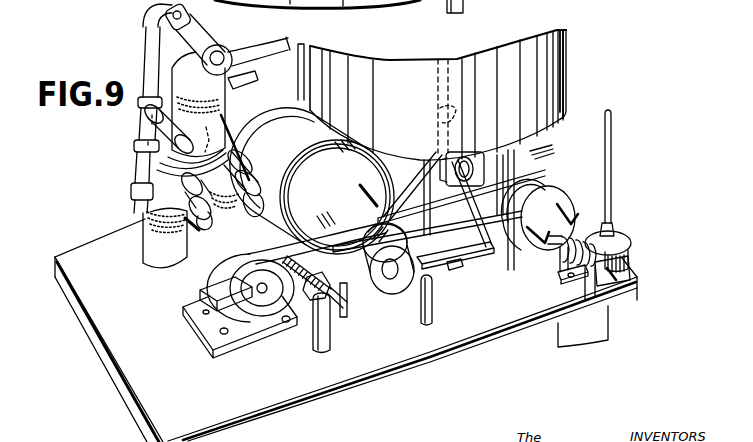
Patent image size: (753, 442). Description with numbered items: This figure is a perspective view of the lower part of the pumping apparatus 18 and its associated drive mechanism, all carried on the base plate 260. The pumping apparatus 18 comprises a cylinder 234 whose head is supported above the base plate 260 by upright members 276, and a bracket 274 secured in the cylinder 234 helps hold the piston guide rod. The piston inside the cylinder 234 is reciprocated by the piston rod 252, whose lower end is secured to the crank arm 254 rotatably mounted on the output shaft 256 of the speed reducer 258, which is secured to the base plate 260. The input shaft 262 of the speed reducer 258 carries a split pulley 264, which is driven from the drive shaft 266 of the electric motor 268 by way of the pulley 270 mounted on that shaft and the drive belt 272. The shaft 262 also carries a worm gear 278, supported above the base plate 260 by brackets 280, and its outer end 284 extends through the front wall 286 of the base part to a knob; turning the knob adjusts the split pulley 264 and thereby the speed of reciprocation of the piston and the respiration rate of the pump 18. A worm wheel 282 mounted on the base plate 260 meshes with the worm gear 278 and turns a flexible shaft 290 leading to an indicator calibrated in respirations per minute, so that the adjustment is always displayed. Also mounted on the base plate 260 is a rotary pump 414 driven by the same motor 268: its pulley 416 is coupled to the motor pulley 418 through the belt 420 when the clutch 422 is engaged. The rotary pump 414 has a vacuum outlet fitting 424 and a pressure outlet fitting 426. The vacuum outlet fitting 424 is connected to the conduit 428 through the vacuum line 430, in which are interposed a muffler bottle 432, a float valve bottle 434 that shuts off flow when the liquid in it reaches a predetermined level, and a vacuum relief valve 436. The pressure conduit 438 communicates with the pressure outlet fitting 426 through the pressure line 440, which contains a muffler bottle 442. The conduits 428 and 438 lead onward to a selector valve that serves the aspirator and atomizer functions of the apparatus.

The pumping apparatus 18 is at (567, 49).
The cylinder 234 is at (566, 68).
The piston rod 252 is at (438, 79).
The crank arm 254 is at (448, 133).
The output shaft 256 is at (470, 157).
The speed reducer 258 is at (548, 137).
The base plate 260 is at (424, 345).
The input shaft 262 is at (555, 246).
The split pulley 264 is at (562, 198).
The drive shaft 266 is at (404, 258).
The electric motor 268 is at (321, 136).
The pulley 270 is at (386, 216).
The drive belt 272 is at (388, 236).
The bracket 274 is at (462, 266).
The upright members 276 is at (432, 308).
The worm gear 278 is at (566, 280).
The brackets 280 is at (562, 262).
The worm wheel 282 is at (631, 243).
The outer end 284 is at (612, 288).
The front wall 286 is at (583, 288).
The flexible shaft 290 is at (611, 145).
The rotary pump 414 is at (200, 282).
The pulley 416 is at (256, 312).
The motor pulley 418 is at (307, 272).
The belt 420 is at (337, 197).
The clutch 422 is at (360, 305).
The vacuum outlet fitting 424 is at (200, 210).
The pressure outlet fitting 426 is at (259, 186).
The conduit 428 is at (258, 49).
The vacuum line 430 is at (147, 52).
The muffler bottle 432 is at (147, 238).
The float valve bottle 434 is at (214, 95).
The vacuum relief valve 436 is at (133, 197).
The pressure conduit 438 is at (244, 85).
The pressure line 440 is at (237, 152).
The muffler bottle 442 is at (195, 158).